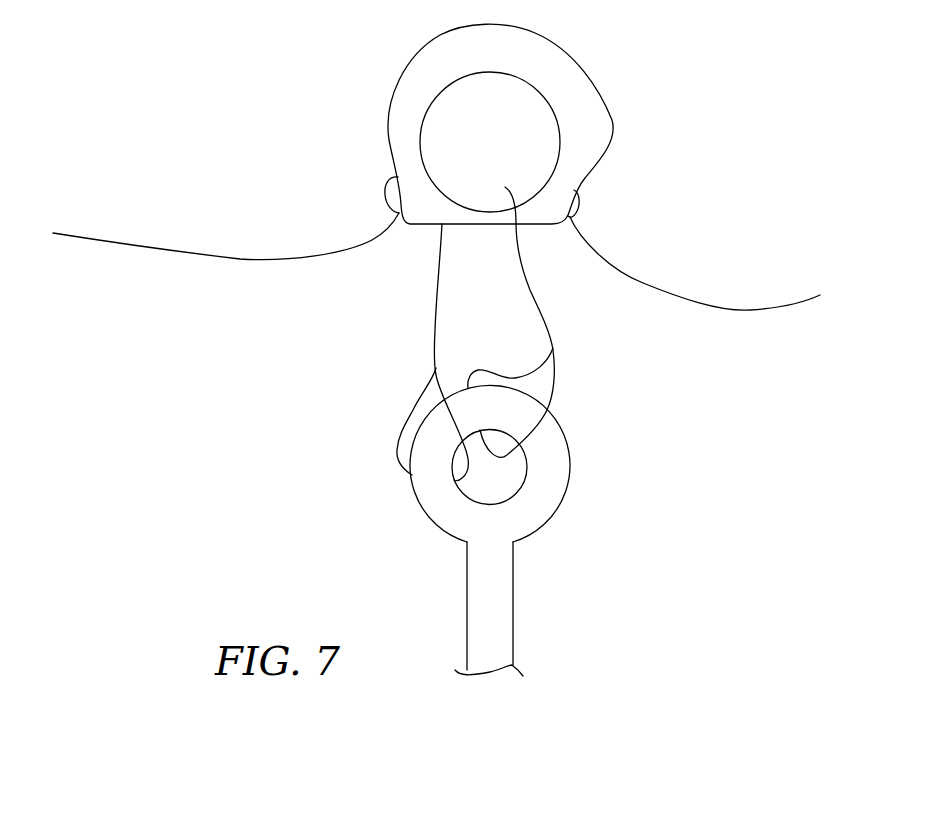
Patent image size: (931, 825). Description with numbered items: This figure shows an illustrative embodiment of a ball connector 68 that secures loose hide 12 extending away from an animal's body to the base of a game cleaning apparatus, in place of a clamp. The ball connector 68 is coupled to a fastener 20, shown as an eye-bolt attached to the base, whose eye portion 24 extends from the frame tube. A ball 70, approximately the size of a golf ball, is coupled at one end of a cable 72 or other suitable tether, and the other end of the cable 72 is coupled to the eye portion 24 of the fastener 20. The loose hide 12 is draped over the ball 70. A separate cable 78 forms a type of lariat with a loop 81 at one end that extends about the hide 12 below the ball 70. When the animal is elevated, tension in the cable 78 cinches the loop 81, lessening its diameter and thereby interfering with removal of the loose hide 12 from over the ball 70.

The hide 12 is at (242, 259).
The fastener 20 is at (524, 589).
The eye portion 24 is at (557, 458).
The ball connector 68 is at (237, 424).
The ball 70 is at (501, 135).
The cable 72 is at (547, 323).
The cable 78 is at (433, 328).
The loop 81 is at (386, 180).